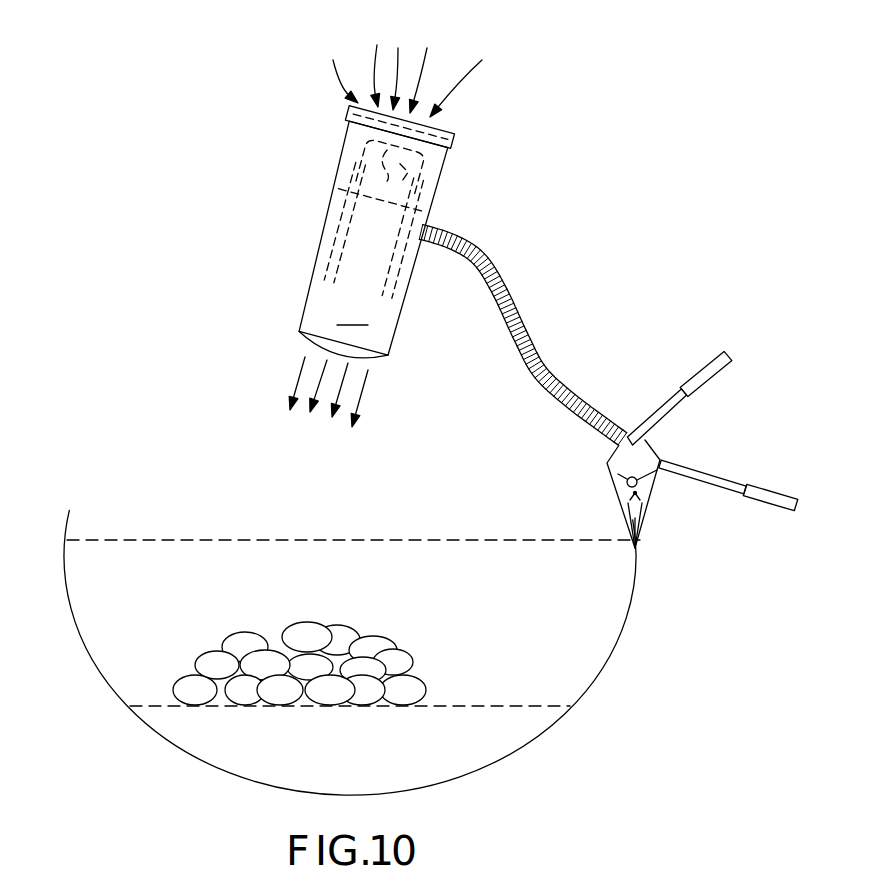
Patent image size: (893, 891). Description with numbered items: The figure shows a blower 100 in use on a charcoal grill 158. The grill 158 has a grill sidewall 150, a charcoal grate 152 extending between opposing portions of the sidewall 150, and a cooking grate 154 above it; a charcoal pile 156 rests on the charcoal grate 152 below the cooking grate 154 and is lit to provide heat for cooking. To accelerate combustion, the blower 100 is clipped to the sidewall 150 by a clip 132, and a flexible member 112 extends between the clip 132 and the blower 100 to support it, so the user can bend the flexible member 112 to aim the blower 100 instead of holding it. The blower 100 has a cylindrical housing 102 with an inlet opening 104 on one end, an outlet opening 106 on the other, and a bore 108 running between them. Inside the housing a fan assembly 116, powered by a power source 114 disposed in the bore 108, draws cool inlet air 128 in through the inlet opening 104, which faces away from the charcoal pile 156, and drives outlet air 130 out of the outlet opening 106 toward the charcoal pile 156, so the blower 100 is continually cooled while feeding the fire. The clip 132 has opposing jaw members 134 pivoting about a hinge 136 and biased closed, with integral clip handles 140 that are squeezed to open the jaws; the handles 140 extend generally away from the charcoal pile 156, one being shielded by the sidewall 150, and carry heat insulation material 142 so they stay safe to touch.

The blower 100 is at (375, 246).
The cylindrical housing 102 is at (370, 238).
The inlet opening 104 is at (399, 127).
The outlet opening 106 is at (342, 348).
The bore 108 is at (352, 313).
The flexible member 112 is at (521, 352).
The power source 114 is at (374, 230).
The fan assembly 116 is at (390, 168).
The inlet air 128 is at (388, 58).
The outlet air 130 is at (352, 430).
The clip 132 is at (681, 469).
The opposing jaw members 134 is at (627, 532).
The hinge 136 is at (639, 486).
The clip handles 140 is at (656, 414).
The heat insulation material 142 is at (709, 370).
The grill sidewall 150 is at (590, 686).
The charcoal grate 152 is at (491, 707).
The cooking grate 154 is at (102, 537).
The charcoal pile 156 is at (350, 626).
The charcoal grill 158 is at (353, 637).